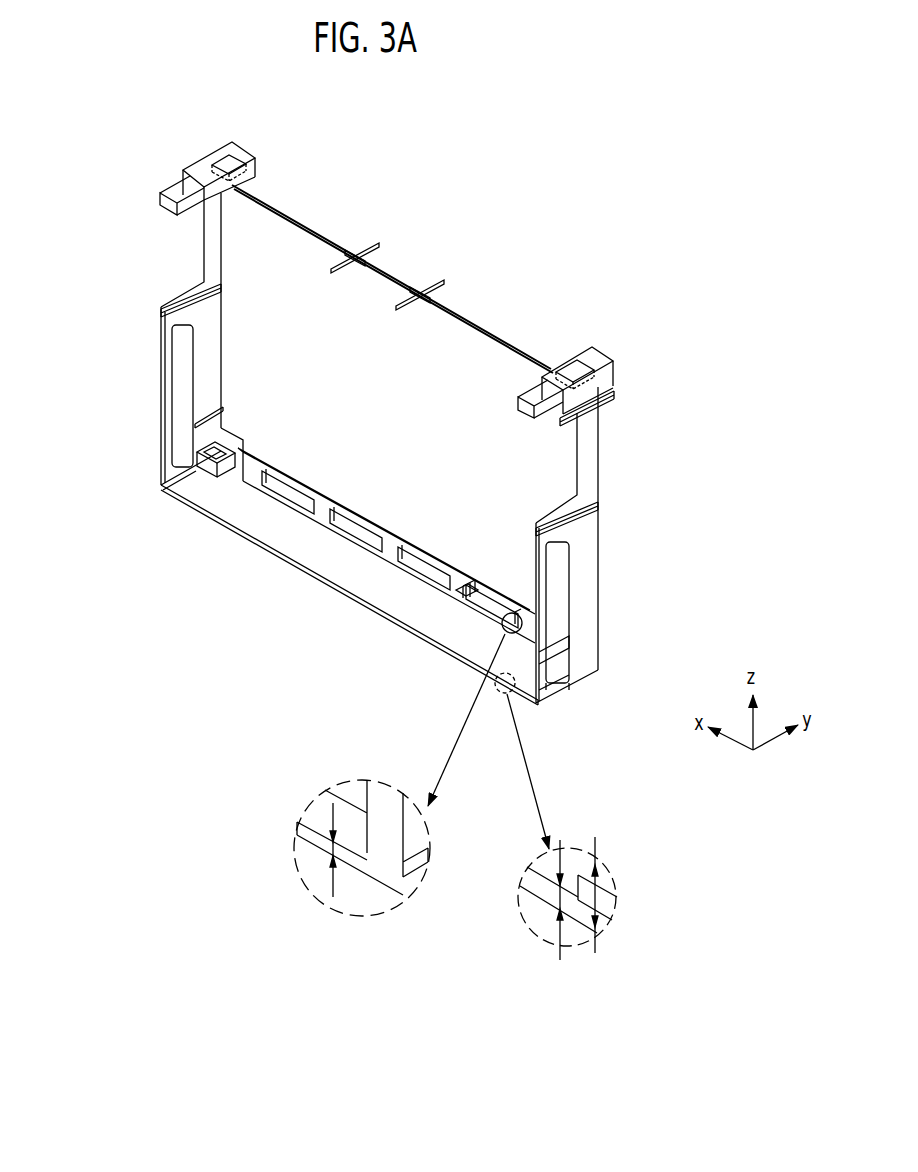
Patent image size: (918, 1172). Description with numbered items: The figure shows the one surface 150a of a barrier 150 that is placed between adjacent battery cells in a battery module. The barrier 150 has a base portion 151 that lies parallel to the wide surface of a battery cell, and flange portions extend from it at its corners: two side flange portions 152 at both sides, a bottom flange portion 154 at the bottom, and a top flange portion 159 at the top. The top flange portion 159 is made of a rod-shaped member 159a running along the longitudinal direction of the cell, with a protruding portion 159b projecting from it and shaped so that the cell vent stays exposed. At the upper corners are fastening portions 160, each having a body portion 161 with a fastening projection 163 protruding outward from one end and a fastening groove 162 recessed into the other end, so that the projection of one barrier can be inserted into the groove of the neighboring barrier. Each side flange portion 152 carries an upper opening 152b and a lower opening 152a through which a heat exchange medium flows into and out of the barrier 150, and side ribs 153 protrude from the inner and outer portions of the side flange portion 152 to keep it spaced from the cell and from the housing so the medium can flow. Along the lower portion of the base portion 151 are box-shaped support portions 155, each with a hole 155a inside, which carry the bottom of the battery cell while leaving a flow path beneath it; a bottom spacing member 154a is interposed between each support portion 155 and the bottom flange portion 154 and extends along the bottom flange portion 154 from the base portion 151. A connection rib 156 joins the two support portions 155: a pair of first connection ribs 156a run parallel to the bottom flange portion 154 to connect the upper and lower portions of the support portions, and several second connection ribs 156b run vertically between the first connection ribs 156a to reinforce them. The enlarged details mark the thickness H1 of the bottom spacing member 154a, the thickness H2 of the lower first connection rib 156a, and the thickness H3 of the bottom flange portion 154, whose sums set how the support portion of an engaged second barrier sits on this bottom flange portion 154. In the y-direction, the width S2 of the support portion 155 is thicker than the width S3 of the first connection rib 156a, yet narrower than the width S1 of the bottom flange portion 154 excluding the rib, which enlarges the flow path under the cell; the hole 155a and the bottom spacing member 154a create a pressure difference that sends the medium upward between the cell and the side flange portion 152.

The barrier 150 is at (554, 247).
The one surface 150a is at (278, 242).
The base portion 151 is at (357, 545).
The side flange portion 152 is at (373, 448).
The lower opening 152a is at (178, 440).
The upper opening 152b is at (178, 242).
The side rib 153 is at (162, 322).
The bottom flange portion 154 is at (341, 608).
The bottom spacing member 154a is at (175, 485).
The support portion 155 is at (352, 575).
The hole 155a is at (215, 476).
The connection rib 156 is at (434, 763).
The first connection rib 156a is at (473, 594).
The second connection rib 156b is at (461, 596).
The top flange portion 159 is at (426, 254).
The rod-shaped member 159a is at (443, 312).
The protruding portion 159b is at (372, 240).
The fastening portion 160 is at (406, 250).
The body portion 161 is at (564, 372).
The fastening groove 162 is at (582, 355).
The fastening projection 163 is at (528, 397).
The width of the bottom flange portion S1 is at (306, 519).
The width of the support portion S2 is at (213, 478).
The width of the first connection rib S3 is at (286, 458).
The thickness of the bottom spacing member H1 is at (612, 898).
The thickness of the lower first connection rib H2 is at (330, 846).
The thickness of the bottom flange portion H3 is at (570, 912).